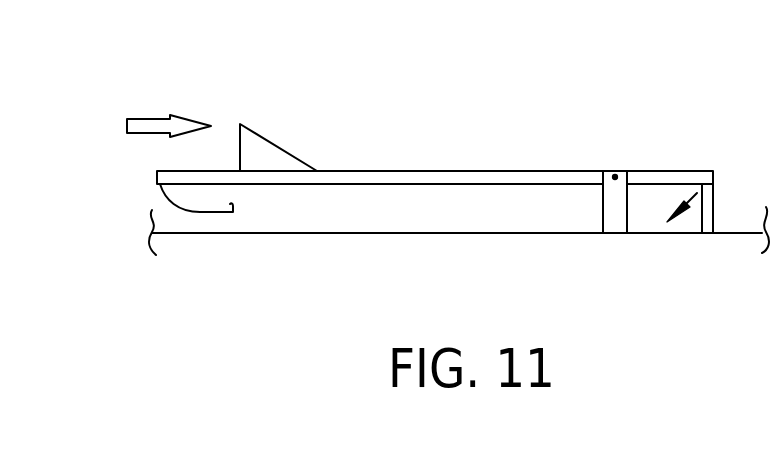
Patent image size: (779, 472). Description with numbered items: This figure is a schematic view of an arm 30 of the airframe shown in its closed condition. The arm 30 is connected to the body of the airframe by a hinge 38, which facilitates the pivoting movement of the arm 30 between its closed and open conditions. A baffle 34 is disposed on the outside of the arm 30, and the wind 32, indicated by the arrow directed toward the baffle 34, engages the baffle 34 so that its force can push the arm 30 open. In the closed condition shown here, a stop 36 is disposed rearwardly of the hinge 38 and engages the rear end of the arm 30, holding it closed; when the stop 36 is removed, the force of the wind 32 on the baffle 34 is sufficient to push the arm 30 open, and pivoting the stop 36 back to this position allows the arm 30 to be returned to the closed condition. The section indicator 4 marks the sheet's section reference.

The section line / support bracket 4 is at (202, 213).
The arm 30 is at (562, 170).
The wind 32 is at (167, 117).
The baffle 34 is at (252, 135).
The stop 36 is at (714, 205).
The hinge 38 is at (617, 174).